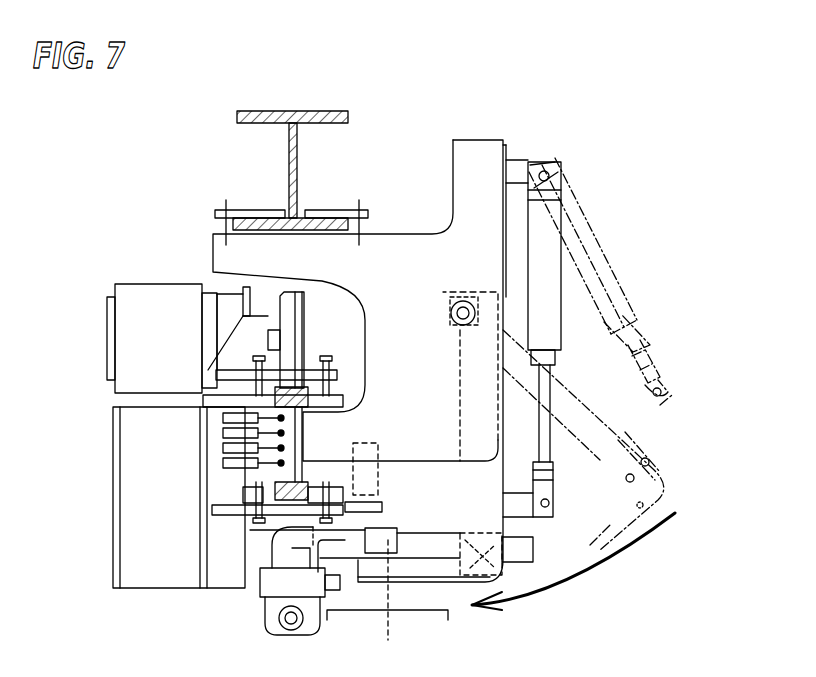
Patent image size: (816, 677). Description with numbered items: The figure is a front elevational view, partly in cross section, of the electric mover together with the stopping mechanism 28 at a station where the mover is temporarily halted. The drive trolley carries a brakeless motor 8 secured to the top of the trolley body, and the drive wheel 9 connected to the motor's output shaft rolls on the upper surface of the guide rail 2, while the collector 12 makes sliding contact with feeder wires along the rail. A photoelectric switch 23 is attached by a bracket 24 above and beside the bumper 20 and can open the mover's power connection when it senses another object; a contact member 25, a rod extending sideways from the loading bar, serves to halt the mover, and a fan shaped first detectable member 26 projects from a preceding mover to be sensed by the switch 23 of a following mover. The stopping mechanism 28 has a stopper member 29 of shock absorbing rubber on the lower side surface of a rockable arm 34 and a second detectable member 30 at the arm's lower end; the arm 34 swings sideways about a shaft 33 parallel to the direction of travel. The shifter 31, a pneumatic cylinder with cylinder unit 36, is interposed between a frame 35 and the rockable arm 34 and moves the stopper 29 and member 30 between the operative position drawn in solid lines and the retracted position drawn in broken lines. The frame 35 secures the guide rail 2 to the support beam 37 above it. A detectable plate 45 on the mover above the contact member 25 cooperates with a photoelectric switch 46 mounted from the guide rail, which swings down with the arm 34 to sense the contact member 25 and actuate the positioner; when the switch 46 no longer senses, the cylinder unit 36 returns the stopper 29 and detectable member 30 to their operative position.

The guide rail 2 is at (290, 356).
The brakeless motor 8 is at (138, 345).
The drive wheel 9 is at (293, 313).
The collector 12 is at (215, 462).
The bumper 20 is at (272, 585).
The photoelectric switch 23 is at (380, 543).
The bracket 24 is at (290, 548).
The contact member 25 is at (520, 548).
The first detectable member 26 is at (369, 612).
The stopping mechanism 28 is at (512, 573).
The stopper member 29 is at (660, 475).
The second detectable member 30 is at (603, 547).
The shifter 31 is at (563, 290).
The shaft 33 is at (453, 323).
The rockable arm 34 is at (473, 483).
The frame 35 is at (448, 252).
The cylinder unit 36 is at (562, 320).
The support beam 37 is at (290, 168).
The detectable plate 45 is at (384, 507).
The photoelectric switch 46 is at (365, 470).